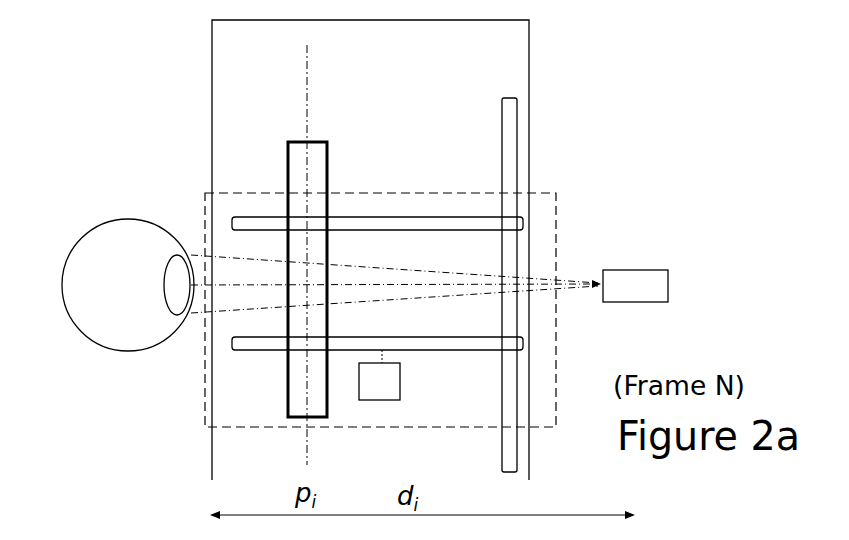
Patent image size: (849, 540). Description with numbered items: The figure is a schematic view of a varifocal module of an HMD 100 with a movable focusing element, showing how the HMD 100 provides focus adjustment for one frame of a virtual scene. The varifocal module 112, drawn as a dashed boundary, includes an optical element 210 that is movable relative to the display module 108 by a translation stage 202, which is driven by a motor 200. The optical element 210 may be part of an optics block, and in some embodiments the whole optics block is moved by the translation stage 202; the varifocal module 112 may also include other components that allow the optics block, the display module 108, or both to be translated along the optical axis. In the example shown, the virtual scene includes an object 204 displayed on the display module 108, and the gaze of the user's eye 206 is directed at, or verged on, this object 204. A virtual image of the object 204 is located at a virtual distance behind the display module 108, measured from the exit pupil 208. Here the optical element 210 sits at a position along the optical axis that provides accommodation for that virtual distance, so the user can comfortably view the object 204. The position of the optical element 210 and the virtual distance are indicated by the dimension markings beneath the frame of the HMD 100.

The HMD 100 is at (529, 45).
The display module 108 is at (510, 125).
The varifocal module 112 is at (202, 213).
The motor 200 is at (382, 385).
The translation stage 202 is at (482, 350).
The object 204 is at (633, 270).
The user's eye 206 is at (68, 257).
The exit pupil 208 is at (200, 338).
The optical element 210 is at (303, 152).